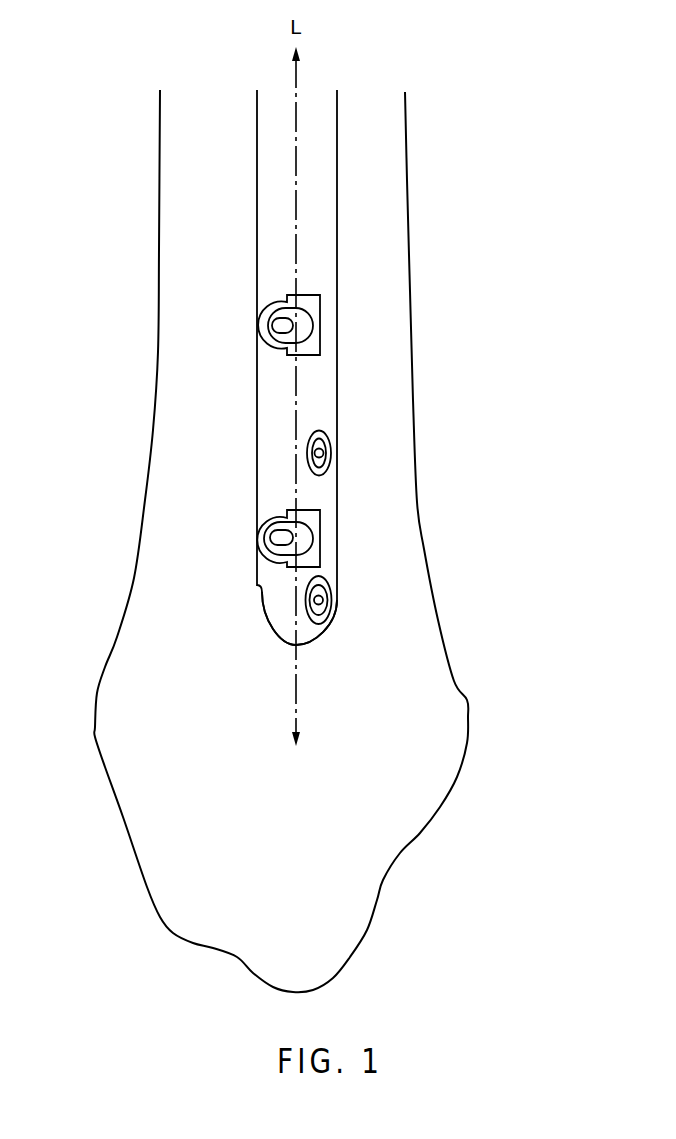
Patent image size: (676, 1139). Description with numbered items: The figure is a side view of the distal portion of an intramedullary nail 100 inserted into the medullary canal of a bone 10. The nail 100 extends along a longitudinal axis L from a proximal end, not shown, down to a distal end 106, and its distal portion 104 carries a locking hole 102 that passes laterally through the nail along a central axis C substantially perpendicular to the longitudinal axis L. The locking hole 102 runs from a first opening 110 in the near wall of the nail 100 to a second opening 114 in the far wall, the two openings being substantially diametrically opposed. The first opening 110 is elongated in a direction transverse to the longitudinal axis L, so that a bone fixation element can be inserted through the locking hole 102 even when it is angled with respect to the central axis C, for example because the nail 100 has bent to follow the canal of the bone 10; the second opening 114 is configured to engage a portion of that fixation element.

The bone 10 is at (414, 669).
The intramedullary nail 100 is at (267, 382).
The locking hole 102 is at (286, 426).
The distal portion 104 is at (268, 385).
The distal end 106 is at (277, 610).
The first opening 110 is at (262, 327).
The second opening 114 is at (278, 322).